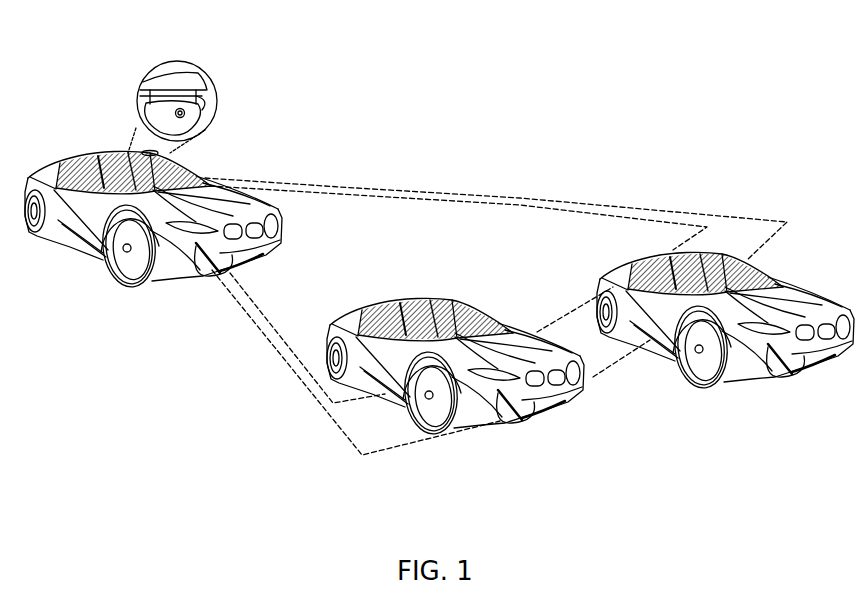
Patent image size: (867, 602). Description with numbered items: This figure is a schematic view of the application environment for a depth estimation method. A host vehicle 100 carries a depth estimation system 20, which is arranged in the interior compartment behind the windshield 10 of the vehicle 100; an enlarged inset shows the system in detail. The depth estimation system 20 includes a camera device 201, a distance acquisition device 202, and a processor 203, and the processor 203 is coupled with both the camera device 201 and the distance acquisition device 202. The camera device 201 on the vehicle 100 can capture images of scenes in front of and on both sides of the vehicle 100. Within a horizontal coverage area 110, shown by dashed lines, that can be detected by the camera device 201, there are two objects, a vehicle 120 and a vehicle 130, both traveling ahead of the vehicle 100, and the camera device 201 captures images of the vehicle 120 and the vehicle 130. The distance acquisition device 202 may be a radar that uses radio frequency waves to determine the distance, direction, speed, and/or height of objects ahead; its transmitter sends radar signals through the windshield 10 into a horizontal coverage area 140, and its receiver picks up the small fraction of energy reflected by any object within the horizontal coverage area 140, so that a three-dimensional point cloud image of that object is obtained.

The windshield 10 is at (150, 160).
The depth estimation system 20 is at (178, 95).
The vehicle 100 is at (90, 220).
The horizontal coverage area 110 is at (293, 357).
The vehicle 120 is at (757, 363).
The vehicle 130 is at (563, 410).
The horizontal coverage area 140 is at (322, 403).
The camera device 201 is at (193, 112).
The distance acquisition device 202 is at (177, 78).
The processor 203 is at (202, 101).